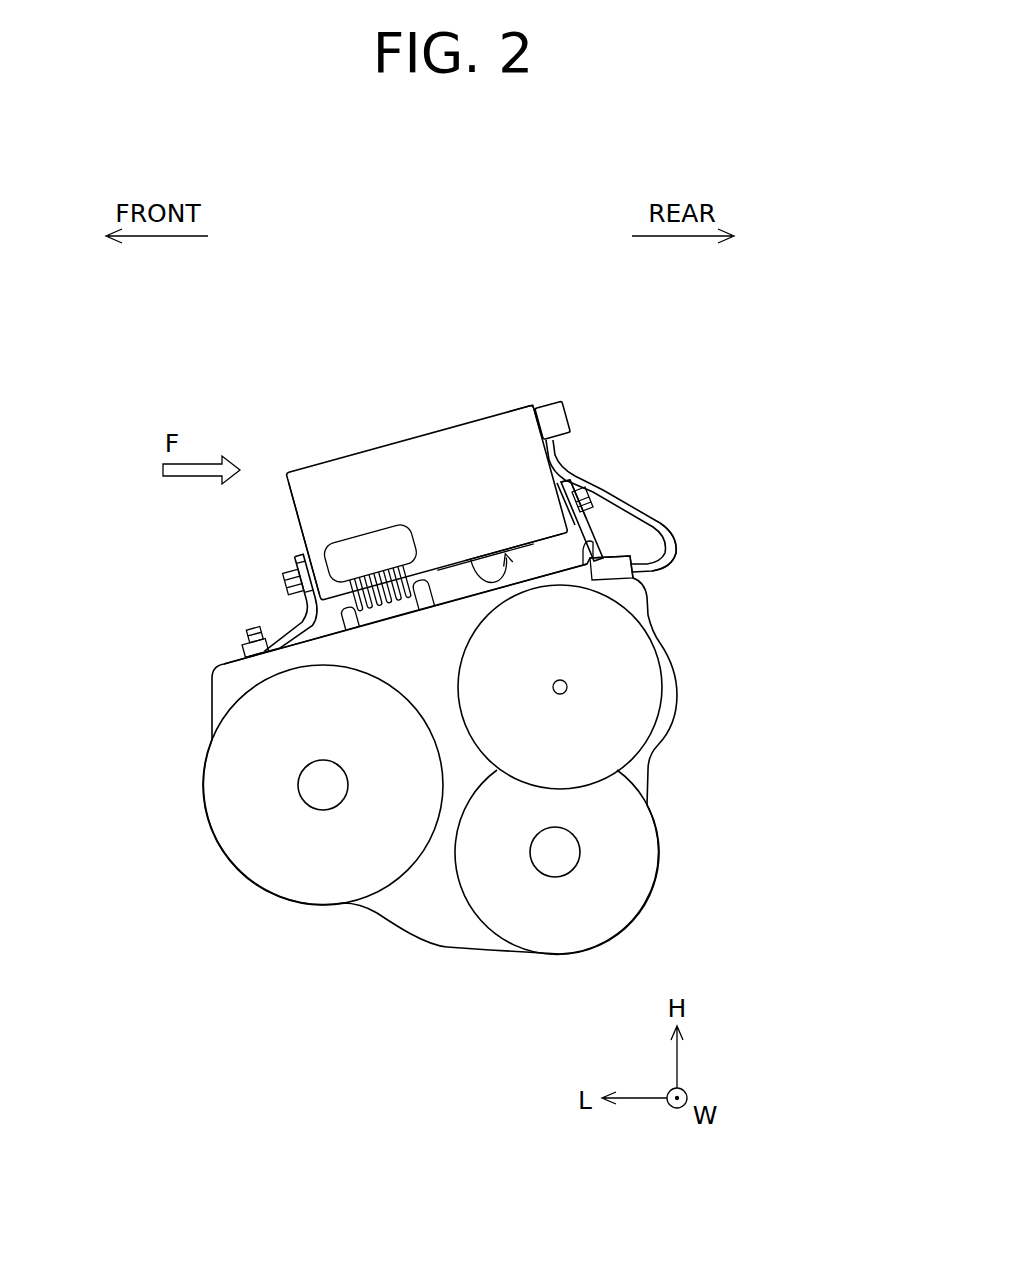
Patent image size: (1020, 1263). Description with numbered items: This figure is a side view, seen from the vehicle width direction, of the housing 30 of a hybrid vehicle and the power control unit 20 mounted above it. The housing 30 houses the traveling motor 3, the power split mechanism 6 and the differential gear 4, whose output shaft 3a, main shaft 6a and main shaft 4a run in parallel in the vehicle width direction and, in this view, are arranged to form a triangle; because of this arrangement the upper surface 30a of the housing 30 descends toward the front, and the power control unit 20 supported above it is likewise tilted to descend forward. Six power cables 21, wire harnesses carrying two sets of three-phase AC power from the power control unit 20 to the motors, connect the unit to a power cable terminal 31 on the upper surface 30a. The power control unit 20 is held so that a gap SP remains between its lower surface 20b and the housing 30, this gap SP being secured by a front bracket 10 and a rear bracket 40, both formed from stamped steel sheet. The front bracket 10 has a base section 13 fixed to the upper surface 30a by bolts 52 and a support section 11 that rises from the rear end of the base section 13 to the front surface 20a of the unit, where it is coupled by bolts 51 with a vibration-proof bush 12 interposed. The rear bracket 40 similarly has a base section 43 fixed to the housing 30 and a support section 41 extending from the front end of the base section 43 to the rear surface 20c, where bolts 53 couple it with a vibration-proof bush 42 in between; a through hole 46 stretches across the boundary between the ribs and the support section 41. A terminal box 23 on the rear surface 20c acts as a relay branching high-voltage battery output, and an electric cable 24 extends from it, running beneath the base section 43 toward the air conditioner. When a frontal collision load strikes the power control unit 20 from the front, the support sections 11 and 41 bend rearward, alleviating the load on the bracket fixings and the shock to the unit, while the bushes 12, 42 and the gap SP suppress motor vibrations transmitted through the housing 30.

The motor 3 is at (242, 850).
The output shaft 3a is at (323, 790).
The differential gear 4 is at (640, 875).
The main shaft 4a is at (556, 852).
The power split mechanism 6 is at (603, 737).
The main shaft 6a is at (568, 686).
The front bracket 10 is at (288, 532).
The support section 11 is at (293, 628).
The vibration-proof bush 12 is at (275, 571).
The base section 13 is at (243, 643).
The power control unit 20 is at (350, 452).
The front surface 20a is at (280, 485).
The lower surface 20b is at (505, 552).
The rear surface 20c is at (546, 390).
The power cable 21 is at (418, 540).
The terminal box 23 is at (565, 422).
The electric cable 24 is at (567, 448).
The housing 30 is at (447, 935).
The upper surface 30a is at (307, 640).
The power cable terminal 31 is at (402, 605).
The rear bracket 40 is at (609, 528).
The support section 41 is at (615, 545).
The vibration-proof bush 42 is at (592, 492).
The base section 43 is at (625, 577).
The through hole 46 is at (553, 570).
The bolt 51 is at (282, 590).
The bolt 52 is at (250, 632).
The bolt 53 is at (593, 502).
The gap SP is at (442, 580).